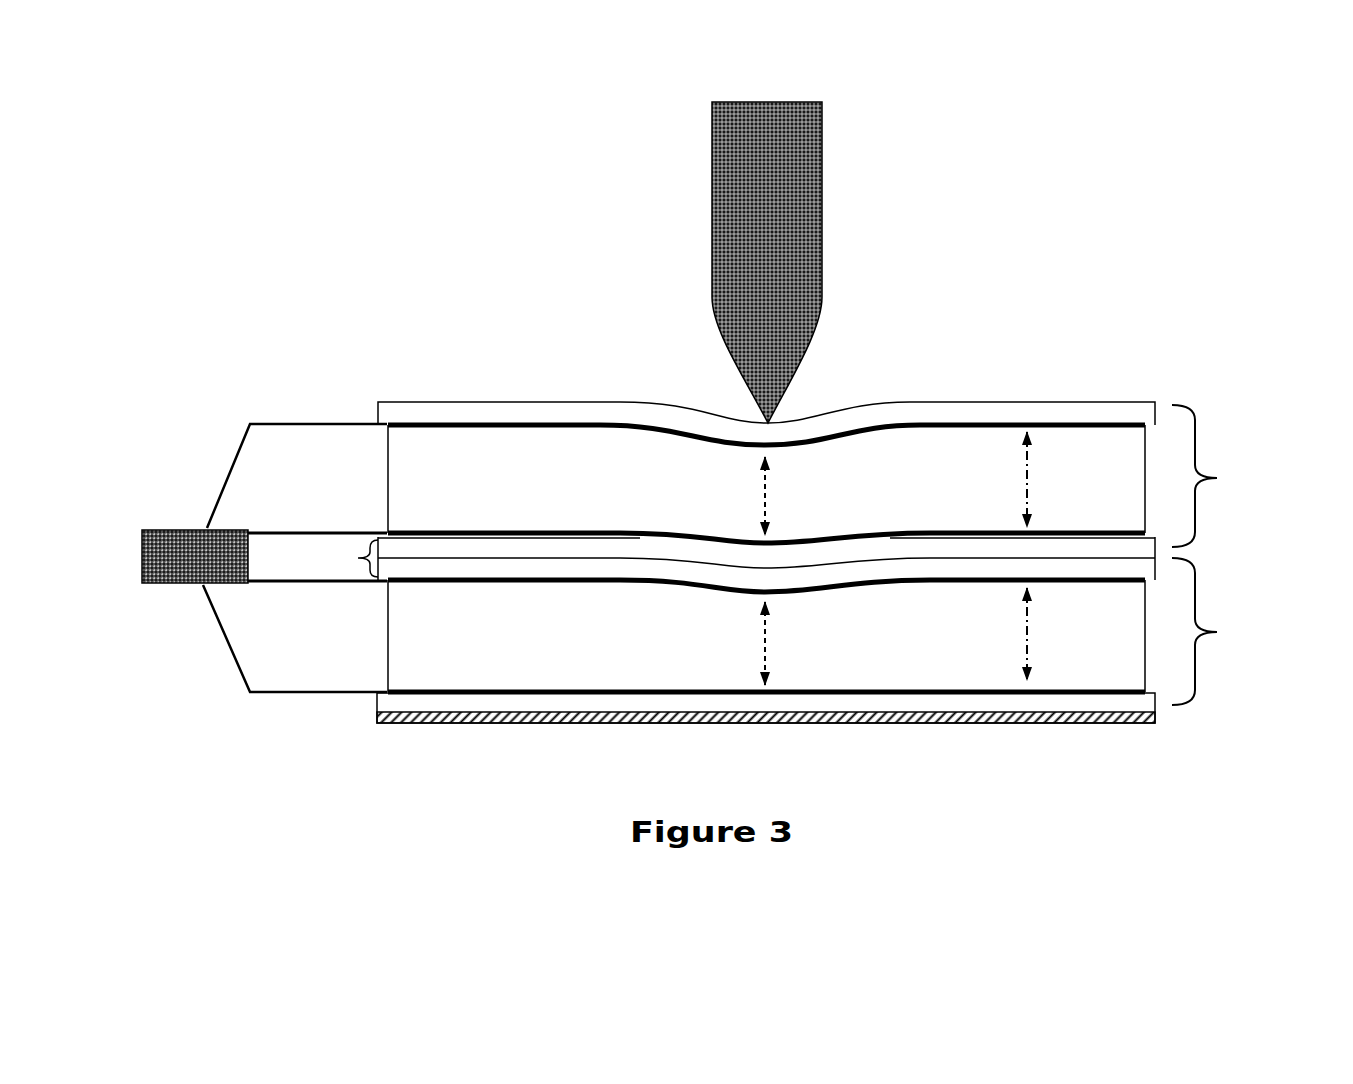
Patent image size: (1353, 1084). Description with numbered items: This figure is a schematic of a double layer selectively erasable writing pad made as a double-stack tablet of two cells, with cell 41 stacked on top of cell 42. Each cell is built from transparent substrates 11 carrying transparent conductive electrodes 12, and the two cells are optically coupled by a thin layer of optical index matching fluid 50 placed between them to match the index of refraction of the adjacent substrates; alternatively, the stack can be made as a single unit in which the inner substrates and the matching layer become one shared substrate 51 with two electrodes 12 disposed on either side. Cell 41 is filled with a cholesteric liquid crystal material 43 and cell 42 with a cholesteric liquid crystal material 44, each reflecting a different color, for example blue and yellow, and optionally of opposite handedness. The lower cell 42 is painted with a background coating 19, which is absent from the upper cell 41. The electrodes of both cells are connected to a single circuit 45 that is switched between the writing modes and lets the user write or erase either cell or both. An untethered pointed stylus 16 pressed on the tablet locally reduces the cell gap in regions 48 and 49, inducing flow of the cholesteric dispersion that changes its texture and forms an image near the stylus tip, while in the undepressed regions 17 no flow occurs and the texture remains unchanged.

The stylus 16 is at (760, 256).
The transparent substrate 11 is at (413, 548).
The transparent conductive electrode 12 is at (567, 528).
The undepressed region 17 is at (1032, 626).
The cell 41 is at (1228, 476).
The cell 42 is at (1231, 631).
The cholesteric liquid crystal material 43 is at (518, 478).
The cholesteric liquid crystal material 44 is at (518, 635).
The circuit 45 is at (192, 543).
The reduced cell gap region 48 is at (763, 500).
The reduced cell gap region 49 is at (762, 647).
The index matching material 50 is at (940, 556).
The shared substrate 51 is at (358, 558).
The background coating 19 is at (1000, 722).